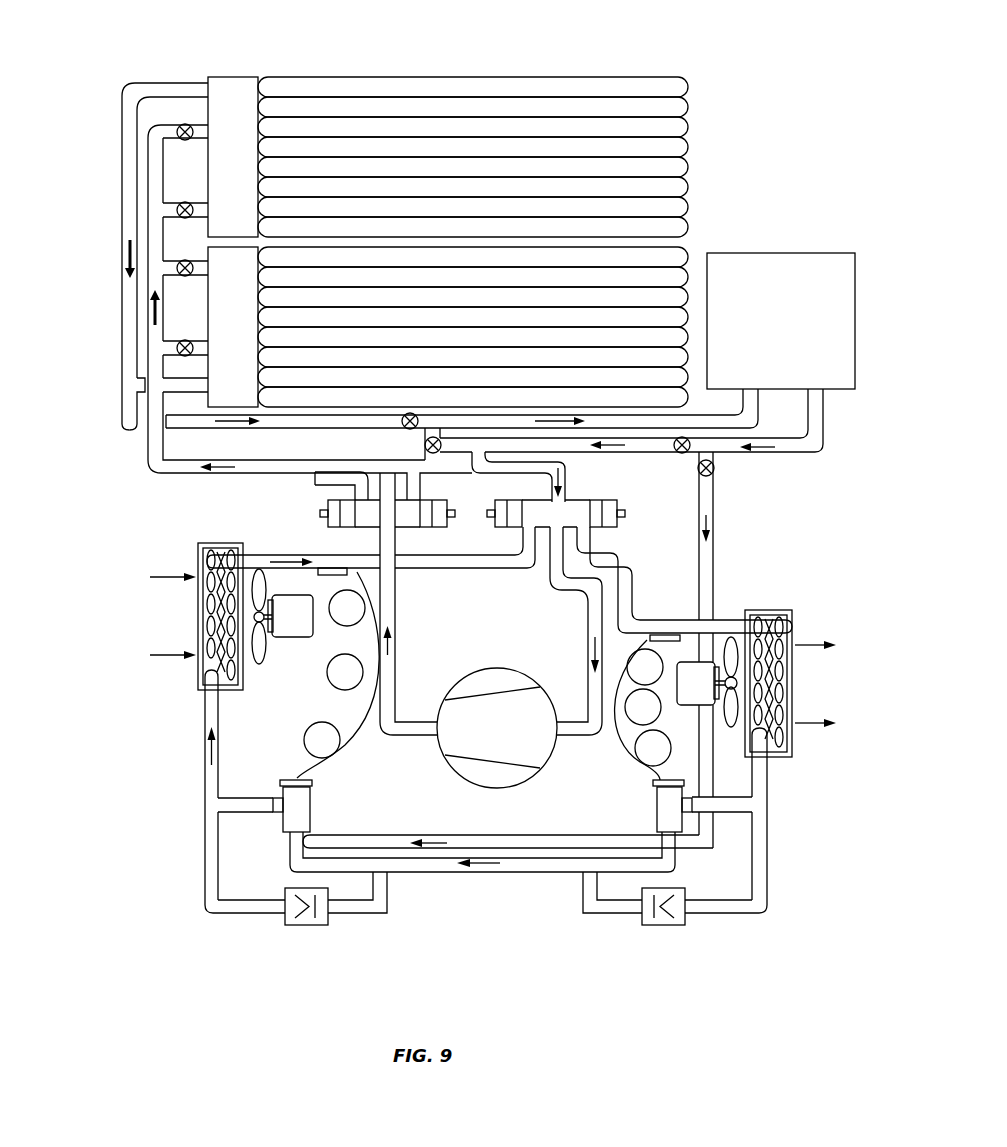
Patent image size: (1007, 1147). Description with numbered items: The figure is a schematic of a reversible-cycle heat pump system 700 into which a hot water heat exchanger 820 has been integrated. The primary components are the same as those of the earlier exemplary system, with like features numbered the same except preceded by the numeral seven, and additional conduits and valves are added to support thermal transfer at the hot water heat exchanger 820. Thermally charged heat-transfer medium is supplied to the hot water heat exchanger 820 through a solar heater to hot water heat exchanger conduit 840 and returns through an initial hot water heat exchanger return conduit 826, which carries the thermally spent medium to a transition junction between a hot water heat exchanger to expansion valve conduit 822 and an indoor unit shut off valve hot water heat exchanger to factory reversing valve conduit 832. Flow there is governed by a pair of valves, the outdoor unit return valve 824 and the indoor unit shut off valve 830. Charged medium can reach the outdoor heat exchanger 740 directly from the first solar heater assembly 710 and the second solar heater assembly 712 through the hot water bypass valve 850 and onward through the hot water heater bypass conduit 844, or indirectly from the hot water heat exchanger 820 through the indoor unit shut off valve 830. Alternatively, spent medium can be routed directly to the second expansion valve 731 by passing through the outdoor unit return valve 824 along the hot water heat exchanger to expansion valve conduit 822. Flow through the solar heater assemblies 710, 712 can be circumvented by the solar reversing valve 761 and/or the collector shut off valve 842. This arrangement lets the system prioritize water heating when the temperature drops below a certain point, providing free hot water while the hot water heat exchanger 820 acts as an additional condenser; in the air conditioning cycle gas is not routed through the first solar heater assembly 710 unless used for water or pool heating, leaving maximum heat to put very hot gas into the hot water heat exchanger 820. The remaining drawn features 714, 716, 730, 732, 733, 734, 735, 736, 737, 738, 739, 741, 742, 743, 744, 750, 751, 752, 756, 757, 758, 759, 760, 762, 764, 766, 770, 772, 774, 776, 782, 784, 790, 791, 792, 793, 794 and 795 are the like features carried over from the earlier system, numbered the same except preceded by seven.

The reversible-cycle heat pump system 700 is at (742, 105).
The first solar heater assembly 710 is at (688, 160).
The solar heater assembly 712 is at (690, 312).
The conduit 714 is at (122, 366).
The return conduit 716 is at (190, 395).
The second pump 730 is at (657, 800).
The second expansion valve 731 is at (310, 800).
The conduit 732 is at (735, 812).
The conduit 733 is at (238, 812).
The conduit 734 is at (767, 770).
The conduit 735 is at (205, 740).
The condenser coil 736 is at (640, 760).
The evaporator coil 737 is at (355, 748).
The conduit 738 is at (700, 625).
The conduit 739 is at (372, 580).
The outdoor heat exchanger 740 is at (792, 680).
The heat exchanger 741 is at (198, 600).
The fan 742 is at (770, 735).
The fan 743 is at (296, 640).
The conduit 744 is at (633, 596).
The compressor 750 is at (515, 668).
The refrigerant loop conduit 751 is at (396, 620).
The conduit end 752 is at (137, 410).
The conduit 756 is at (200, 340).
The conduit 757 is at (200, 262).
The conduit 758 is at (200, 205).
The conduit 759 is at (176, 83).
The pump 760 is at (583, 500).
The solar reversing valve 761 is at (357, 555).
The conduit 762 is at (490, 462).
The pump 764 is at (442, 472).
The pump 766 is at (350, 480).
The valve 770 is at (185, 358).
The valve 772 is at (185, 280).
The valve 774 is at (185, 220).
The valve 776 is at (180, 142).
The conduit 782 is at (560, 590).
The conduit 784 is at (252, 555).
The conduit 790 is at (767, 870).
The conduit 791 is at (205, 850).
The check valve 792 is at (660, 925).
The check valve 793 is at (305, 925).
The conduit 794 is at (612, 913).
The conduit 795 is at (352, 913).
The hot water heat exchanger 820 is at (782, 253).
The hot water heat exchanger to expansion valve conduit 822 is at (714, 550).
The outdoor unit return valve 824 is at (714, 470).
The initial hot water heat exchanger return conduit 826 is at (818, 455).
The indoor unit shut off valve 830 is at (690, 446).
The indoor unit shut off valve hot water heat exchanger to factory reversing valve c 832 is at (652, 438).
The solar heater to hot water heat exchanger conduit 840 is at (643, 415).
The collector shut off valve 842 is at (395, 425).
The hot water heater bypass conduit 844 is at (450, 505).
The hot water bypass valve 850 is at (425, 443).